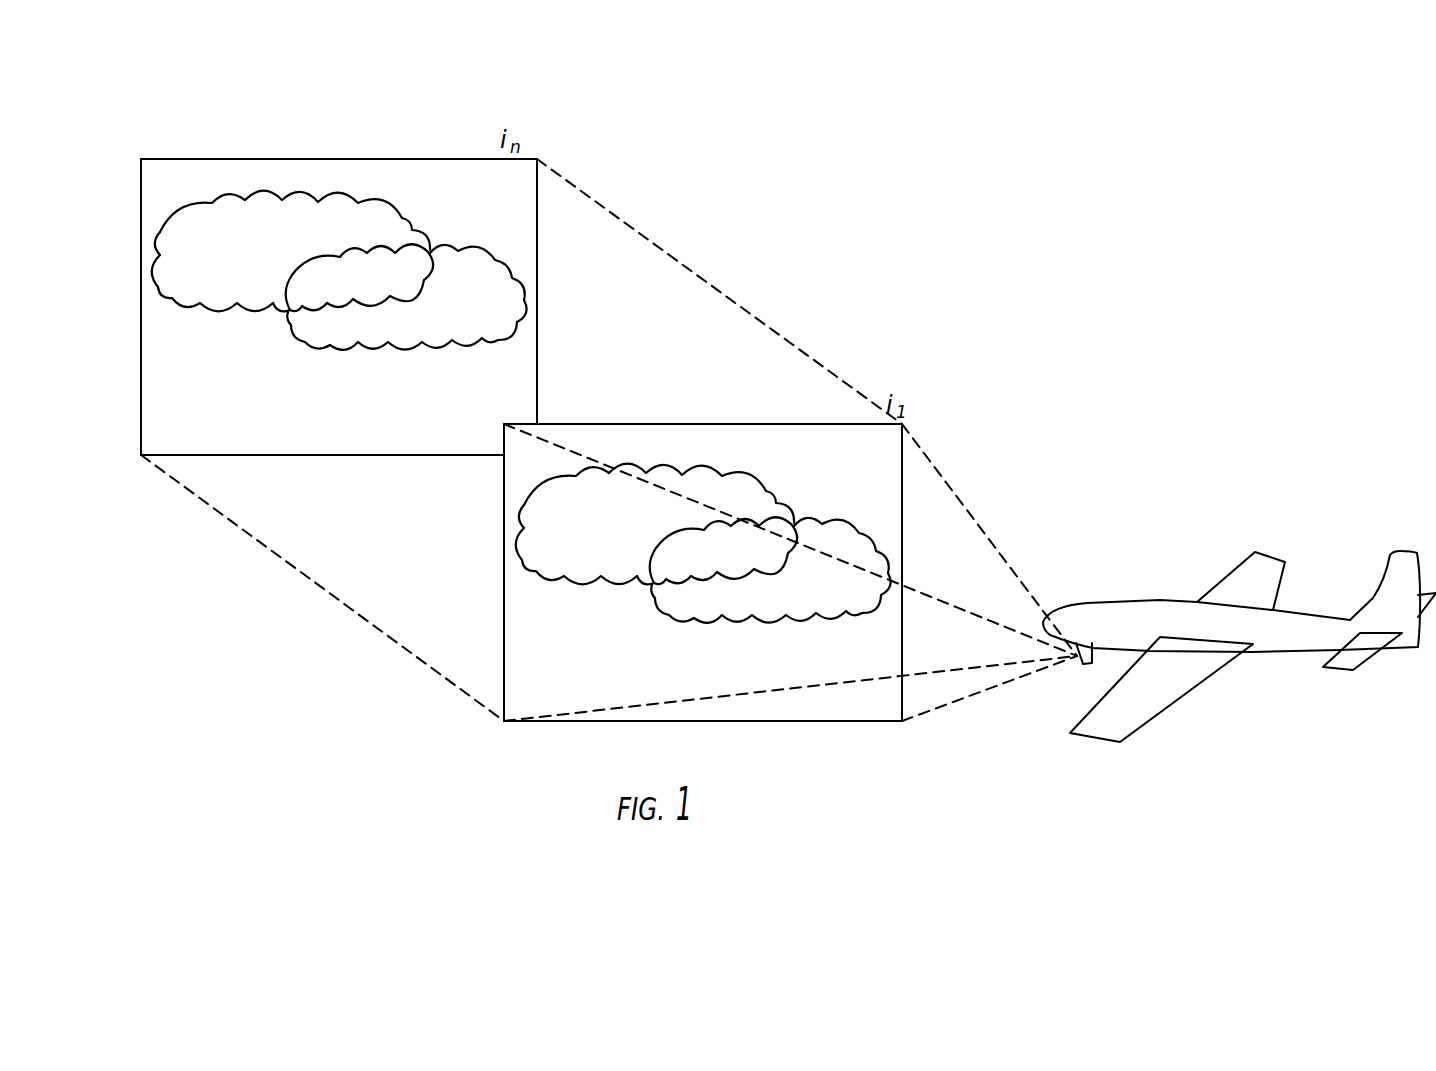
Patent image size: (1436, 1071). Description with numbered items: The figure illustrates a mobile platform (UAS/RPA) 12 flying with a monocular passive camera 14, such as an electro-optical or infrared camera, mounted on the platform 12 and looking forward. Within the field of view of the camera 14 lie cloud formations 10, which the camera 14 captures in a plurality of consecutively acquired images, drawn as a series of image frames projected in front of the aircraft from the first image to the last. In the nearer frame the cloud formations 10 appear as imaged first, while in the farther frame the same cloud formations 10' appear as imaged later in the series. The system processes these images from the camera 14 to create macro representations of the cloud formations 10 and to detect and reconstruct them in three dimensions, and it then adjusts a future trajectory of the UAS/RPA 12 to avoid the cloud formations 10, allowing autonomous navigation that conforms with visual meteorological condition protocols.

The cloud formation 10 is at (703, 474).
The cloud formation 10' is at (339, 194).
The mobile platform (UAS/RPA) 12 is at (1160, 598).
The monocular passive camera 14 is at (1077, 664).